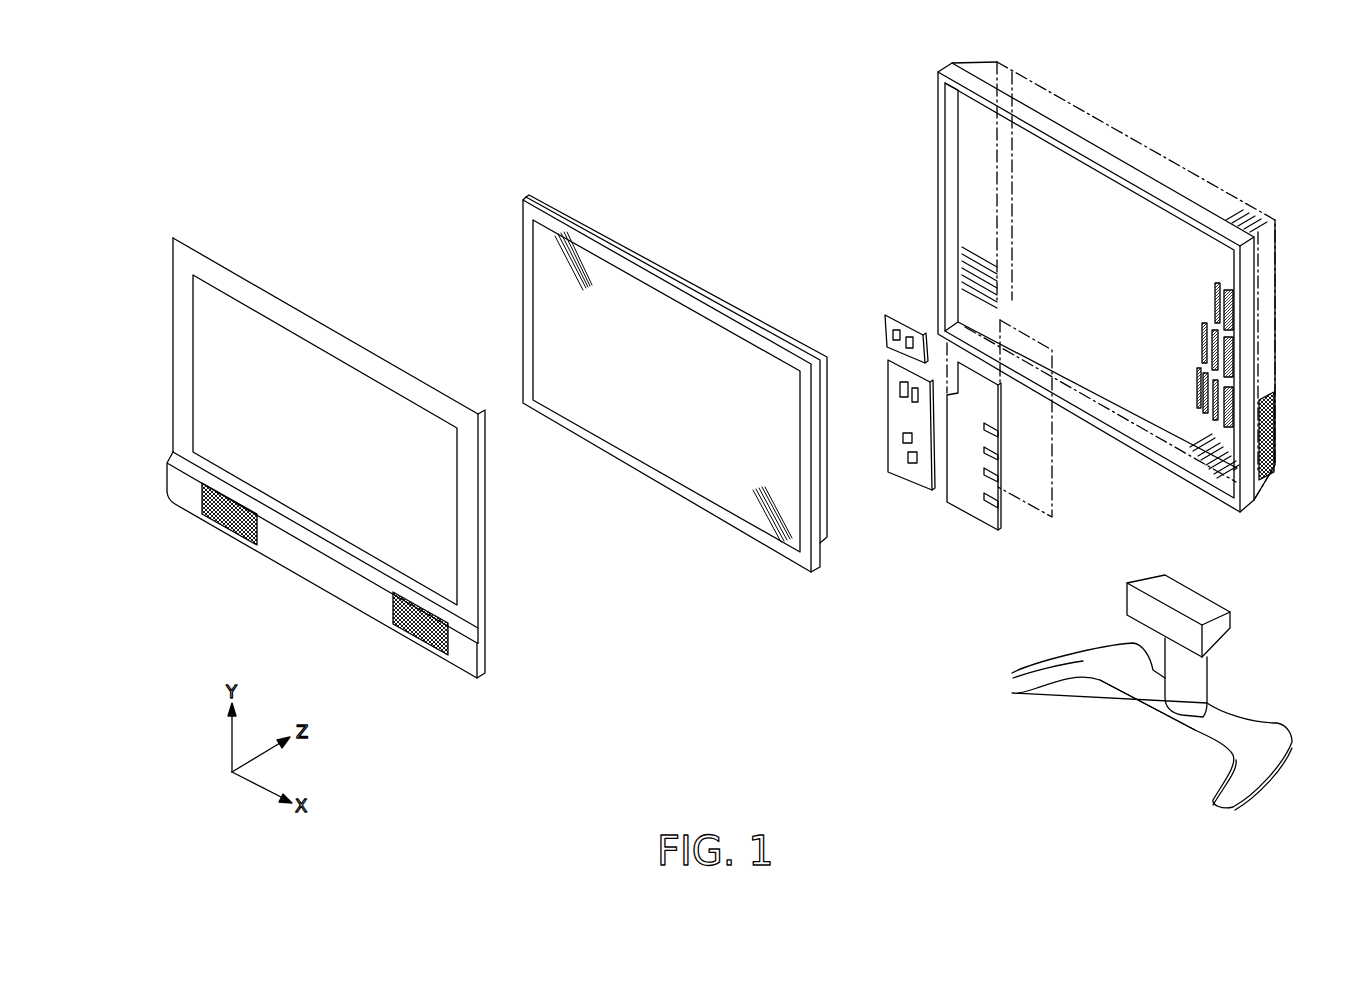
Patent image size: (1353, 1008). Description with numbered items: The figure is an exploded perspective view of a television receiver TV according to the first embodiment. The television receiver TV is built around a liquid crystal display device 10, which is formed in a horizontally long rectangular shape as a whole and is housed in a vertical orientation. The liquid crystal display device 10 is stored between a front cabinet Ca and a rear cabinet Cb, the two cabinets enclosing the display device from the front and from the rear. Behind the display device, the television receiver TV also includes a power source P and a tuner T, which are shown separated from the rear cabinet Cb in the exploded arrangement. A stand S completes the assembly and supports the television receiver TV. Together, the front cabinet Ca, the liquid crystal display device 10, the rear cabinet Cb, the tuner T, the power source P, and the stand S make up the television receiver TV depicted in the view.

The television receiver TV is at (694, 143).
The front cabinet Ca is at (312, 317).
The liquid crystal display device 10 is at (622, 242).
The rear cabinet Cb is at (1098, 133).
The tuner T is at (902, 473).
The power source P is at (963, 513).
The stand S is at (1068, 682).